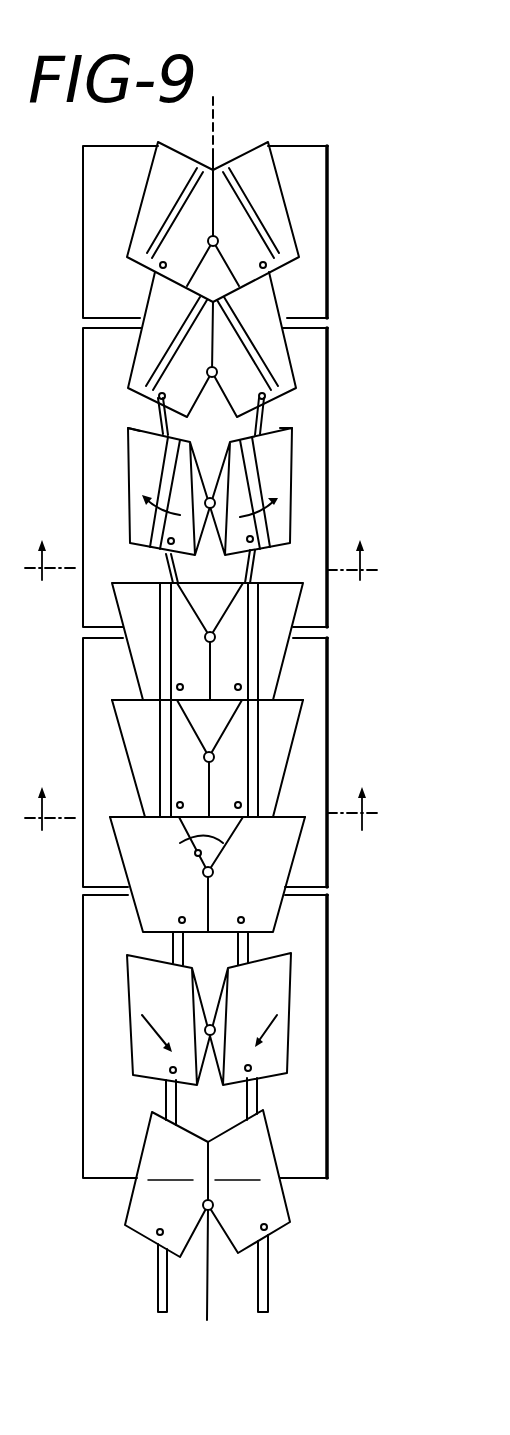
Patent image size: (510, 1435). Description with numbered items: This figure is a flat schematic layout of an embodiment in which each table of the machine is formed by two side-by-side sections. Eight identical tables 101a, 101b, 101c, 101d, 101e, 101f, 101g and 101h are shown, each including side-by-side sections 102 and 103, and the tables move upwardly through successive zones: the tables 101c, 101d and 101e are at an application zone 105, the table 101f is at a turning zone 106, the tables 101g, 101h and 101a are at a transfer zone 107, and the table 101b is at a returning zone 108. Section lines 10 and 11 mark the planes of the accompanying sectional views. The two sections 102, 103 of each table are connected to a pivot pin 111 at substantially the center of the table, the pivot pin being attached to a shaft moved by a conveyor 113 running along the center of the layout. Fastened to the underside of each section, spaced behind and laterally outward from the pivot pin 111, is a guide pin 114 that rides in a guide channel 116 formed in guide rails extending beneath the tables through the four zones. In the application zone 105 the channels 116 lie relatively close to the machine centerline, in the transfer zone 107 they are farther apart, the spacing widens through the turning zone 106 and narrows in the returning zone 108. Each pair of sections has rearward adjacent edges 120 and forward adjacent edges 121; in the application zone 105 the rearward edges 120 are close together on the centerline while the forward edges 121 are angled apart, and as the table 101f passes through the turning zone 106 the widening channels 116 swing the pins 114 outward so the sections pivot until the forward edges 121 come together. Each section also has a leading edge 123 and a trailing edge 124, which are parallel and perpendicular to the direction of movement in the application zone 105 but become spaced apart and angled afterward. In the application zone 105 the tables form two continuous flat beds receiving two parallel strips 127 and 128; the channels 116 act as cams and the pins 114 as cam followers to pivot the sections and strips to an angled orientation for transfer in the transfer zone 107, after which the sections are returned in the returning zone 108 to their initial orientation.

The section line 10- 10 is at (203, 819).
The section line 11- 11 is at (208, 570).
The table 101a is at (305, 1212).
The table 101b is at (302, 1011).
The table 101c is at (303, 873).
The table 101d is at (301, 739).
The table 101e is at (301, 645).
The table 101f is at (300, 476).
The table 101g is at (302, 358).
The table 101h is at (225, 208).
The table section 102 is at (152, 190).
The table section 103 is at (263, 182).
The application zone 105 is at (83, 715).
The turning zone 106 is at (83, 450).
The transfer zone 107 is at (83, 263).
The returning zone 108 is at (83, 1030).
The pivot pin 111 is at (206, 1027).
The conveyor 113 is at (213, 99).
The guide pin 114 is at (157, 398).
The guide channel 116 is at (158, 1277).
The rearward adjacent edge 120 is at (211, 670).
The forward adjacent edge 121 is at (230, 608).
The leading edge 123 is at (231, 441).
The trailing edge 124 is at (135, 548).
The strip 127 is at (162, 222).
The strip 128 is at (263, 220).